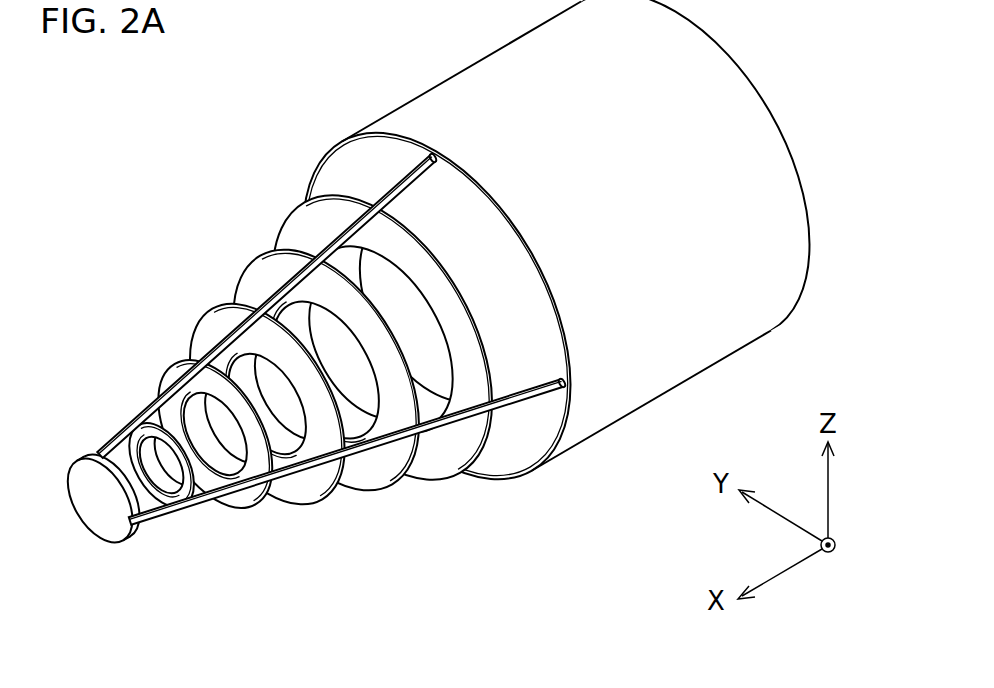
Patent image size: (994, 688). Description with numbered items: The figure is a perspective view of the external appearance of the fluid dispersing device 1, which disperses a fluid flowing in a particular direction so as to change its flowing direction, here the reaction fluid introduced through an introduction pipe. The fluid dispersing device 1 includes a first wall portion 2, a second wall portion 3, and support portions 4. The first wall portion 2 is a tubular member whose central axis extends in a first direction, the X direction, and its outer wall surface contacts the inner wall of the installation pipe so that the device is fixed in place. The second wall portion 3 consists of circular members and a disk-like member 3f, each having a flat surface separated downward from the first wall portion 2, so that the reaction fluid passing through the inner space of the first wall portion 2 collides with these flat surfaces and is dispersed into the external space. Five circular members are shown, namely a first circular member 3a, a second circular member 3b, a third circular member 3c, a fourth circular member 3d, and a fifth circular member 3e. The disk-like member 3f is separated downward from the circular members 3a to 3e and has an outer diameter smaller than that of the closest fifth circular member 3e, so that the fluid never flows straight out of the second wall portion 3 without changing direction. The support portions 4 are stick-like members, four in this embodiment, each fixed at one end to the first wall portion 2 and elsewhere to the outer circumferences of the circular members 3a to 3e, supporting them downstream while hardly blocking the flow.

The fluid dispersing device 1 is at (320, 122).
The first wall portion 2 is at (600, 413).
The second wall portion 3 is at (473, 532).
The first circular member 3a is at (443, 457).
The second circular member 3b is at (380, 473).
The third circular member 3c is at (313, 483).
The fourth circular member 3d is at (247, 500).
The fifth circular member 3e is at (182, 520).
The disk-like member 3f is at (106, 525).
The support portions 4 is at (272, 297).